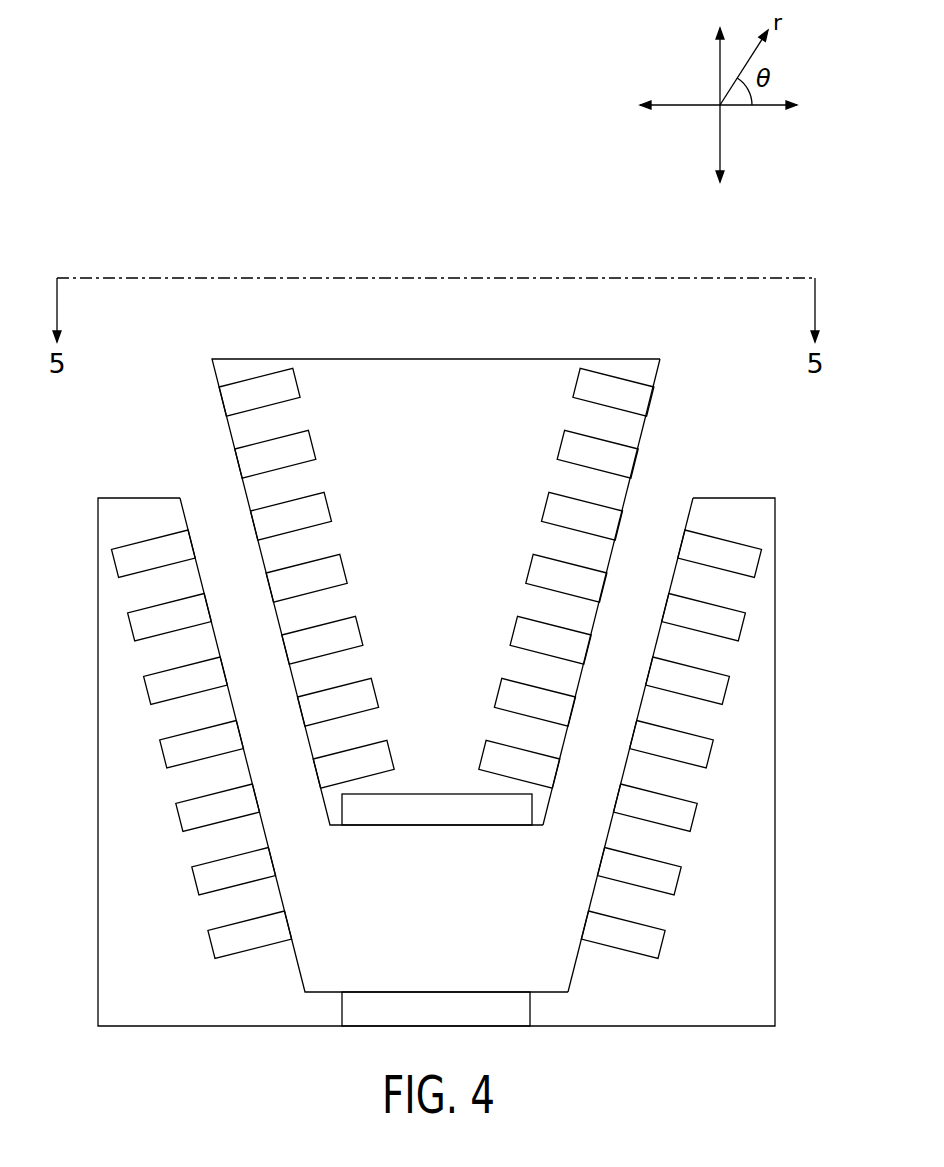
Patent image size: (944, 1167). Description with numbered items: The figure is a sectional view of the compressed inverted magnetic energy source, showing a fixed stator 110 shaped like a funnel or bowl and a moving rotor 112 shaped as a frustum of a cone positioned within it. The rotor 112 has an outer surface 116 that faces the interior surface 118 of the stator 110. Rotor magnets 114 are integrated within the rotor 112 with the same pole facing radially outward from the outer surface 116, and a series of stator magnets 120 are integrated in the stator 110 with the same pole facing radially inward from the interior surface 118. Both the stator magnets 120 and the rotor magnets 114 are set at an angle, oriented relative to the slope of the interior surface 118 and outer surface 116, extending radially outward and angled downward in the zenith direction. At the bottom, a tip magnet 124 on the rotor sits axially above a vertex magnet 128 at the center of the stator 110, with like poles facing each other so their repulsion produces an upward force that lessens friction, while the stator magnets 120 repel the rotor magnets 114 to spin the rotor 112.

The stator 110 is at (747, 880).
The rotor 112 is at (492, 359).
The rotor magnets 114 is at (562, 503).
The outer surface 116 is at (657, 377).
The interior surface 118 is at (688, 517).
The stator magnets 120 is at (748, 560).
The tip magnet 124 is at (368, 815).
The vertex magnet 128 is at (483, 1006).